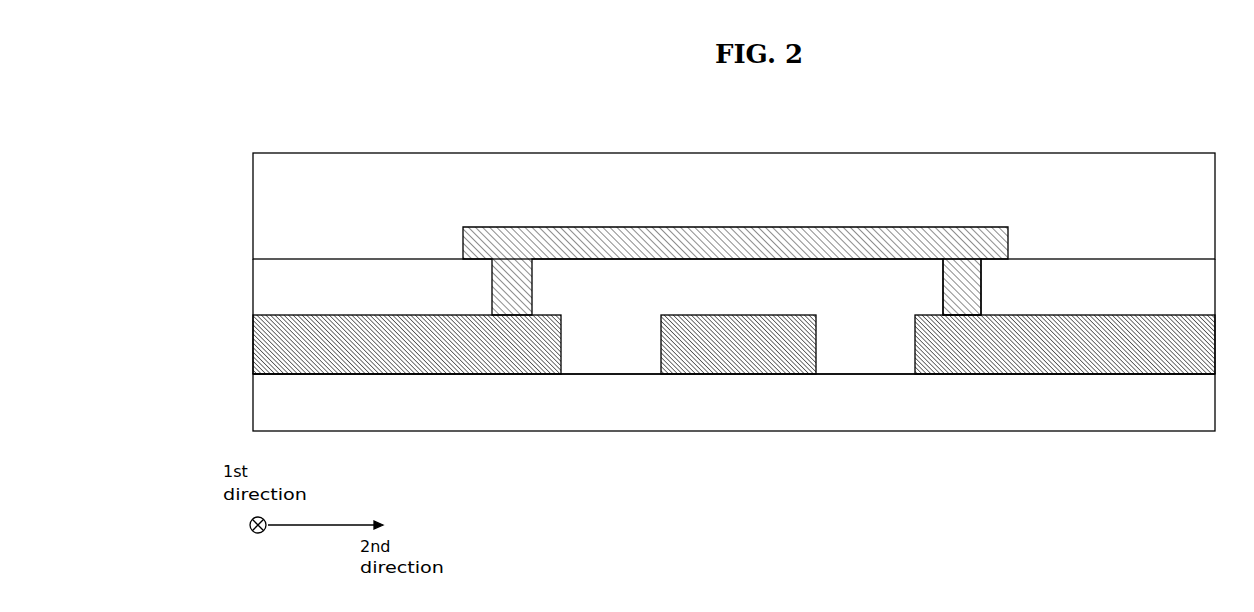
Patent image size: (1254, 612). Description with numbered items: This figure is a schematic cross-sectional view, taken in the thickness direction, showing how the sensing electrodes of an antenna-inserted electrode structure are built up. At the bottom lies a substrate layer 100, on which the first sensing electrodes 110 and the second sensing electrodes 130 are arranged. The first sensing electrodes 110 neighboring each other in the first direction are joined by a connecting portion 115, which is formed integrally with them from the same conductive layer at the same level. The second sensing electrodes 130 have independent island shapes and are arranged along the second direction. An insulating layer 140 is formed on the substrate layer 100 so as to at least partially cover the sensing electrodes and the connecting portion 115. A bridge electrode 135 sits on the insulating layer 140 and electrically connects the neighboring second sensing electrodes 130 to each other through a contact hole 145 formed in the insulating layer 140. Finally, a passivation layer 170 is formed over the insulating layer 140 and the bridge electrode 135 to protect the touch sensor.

The substrate layer 100 is at (890, 398).
The first sensing electrodes 110 is at (738, 408).
The connecting portion 115 is at (723, 372).
The second sensing electrodes 130 is at (488, 372).
The bridge electrode 135 is at (688, 240).
The insulating layer 140 is at (593, 358).
The contact hole 145 is at (978, 281).
The passivation layer 170 is at (437, 172).